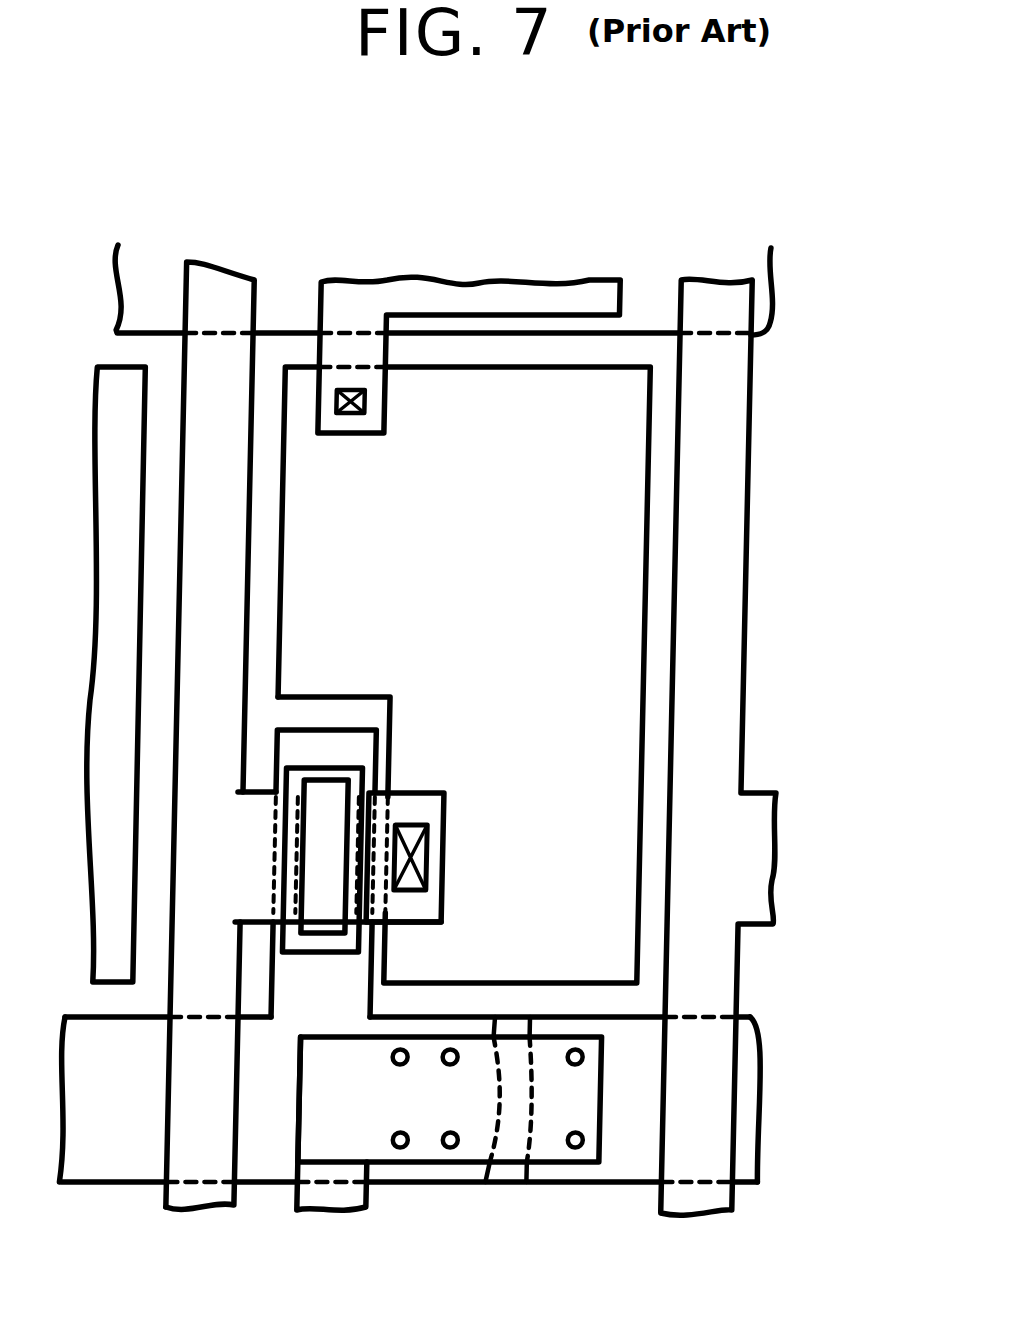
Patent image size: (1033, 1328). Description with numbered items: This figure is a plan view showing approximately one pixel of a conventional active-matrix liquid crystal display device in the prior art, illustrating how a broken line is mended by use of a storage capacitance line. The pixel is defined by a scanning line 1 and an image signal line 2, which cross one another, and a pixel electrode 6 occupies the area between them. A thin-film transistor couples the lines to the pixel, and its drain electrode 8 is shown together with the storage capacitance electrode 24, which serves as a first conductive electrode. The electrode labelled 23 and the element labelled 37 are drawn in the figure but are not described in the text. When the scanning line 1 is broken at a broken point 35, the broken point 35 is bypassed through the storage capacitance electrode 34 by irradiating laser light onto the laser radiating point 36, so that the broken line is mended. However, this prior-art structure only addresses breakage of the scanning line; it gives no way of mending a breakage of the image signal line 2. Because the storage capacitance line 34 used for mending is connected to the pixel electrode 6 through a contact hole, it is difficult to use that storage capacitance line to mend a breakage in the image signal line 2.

The scanning line 1 is at (280, 1168).
The image signal line 2 is at (162, 1162).
The pixel electrode 6 is at (622, 605).
The drain electrode 8 is at (420, 797).
The source electrode 23 is at (330, 790).
The storage capacitance electrode 24 is at (425, 852).
The storage capacitance electrode 34 is at (485, 1150).
The broken point 35 is at (513, 1170).
The laser radiating point 36 is at (395, 1142).
The drain electrode 37 is at (310, 777).